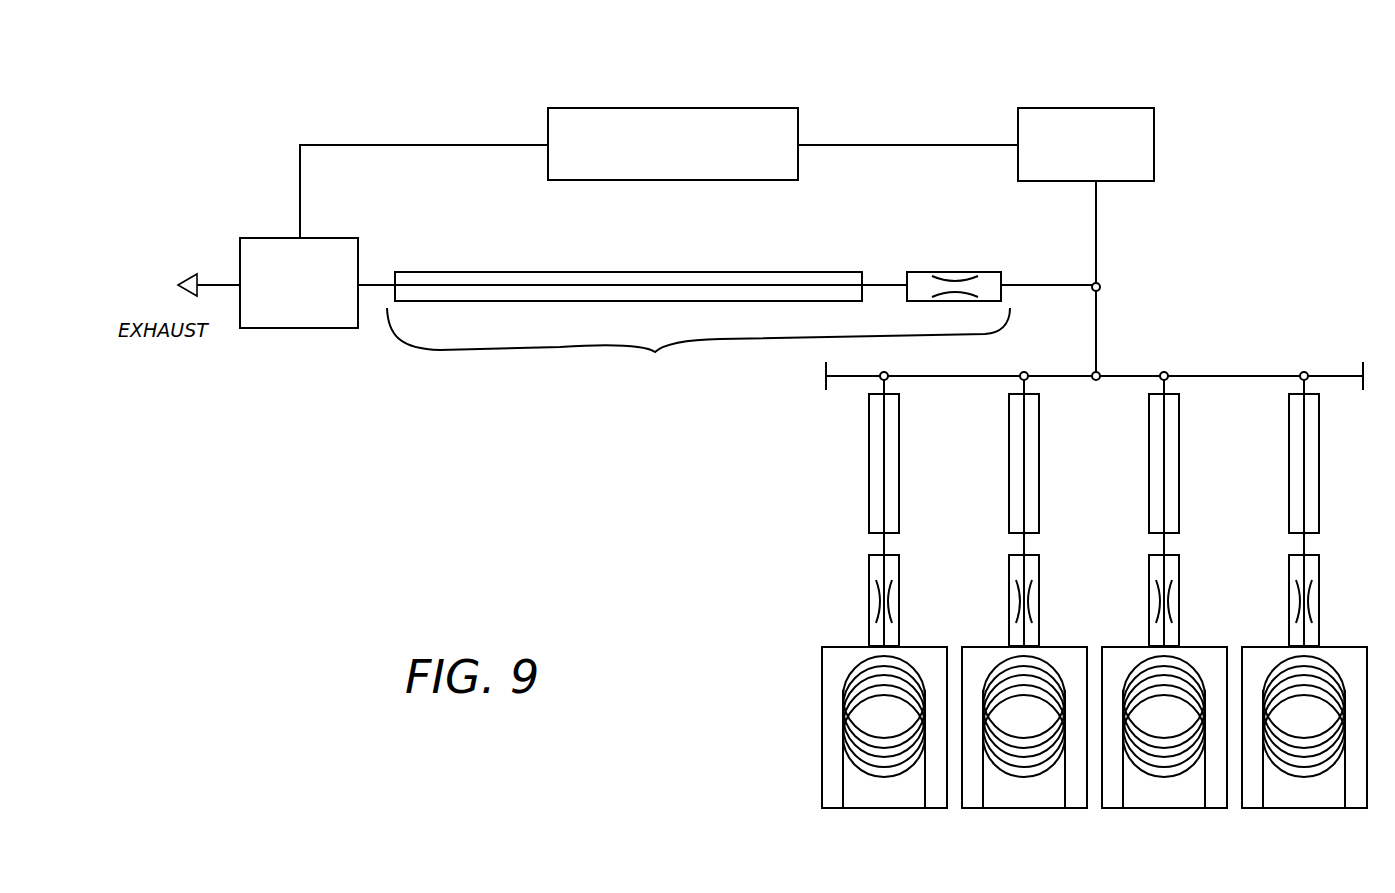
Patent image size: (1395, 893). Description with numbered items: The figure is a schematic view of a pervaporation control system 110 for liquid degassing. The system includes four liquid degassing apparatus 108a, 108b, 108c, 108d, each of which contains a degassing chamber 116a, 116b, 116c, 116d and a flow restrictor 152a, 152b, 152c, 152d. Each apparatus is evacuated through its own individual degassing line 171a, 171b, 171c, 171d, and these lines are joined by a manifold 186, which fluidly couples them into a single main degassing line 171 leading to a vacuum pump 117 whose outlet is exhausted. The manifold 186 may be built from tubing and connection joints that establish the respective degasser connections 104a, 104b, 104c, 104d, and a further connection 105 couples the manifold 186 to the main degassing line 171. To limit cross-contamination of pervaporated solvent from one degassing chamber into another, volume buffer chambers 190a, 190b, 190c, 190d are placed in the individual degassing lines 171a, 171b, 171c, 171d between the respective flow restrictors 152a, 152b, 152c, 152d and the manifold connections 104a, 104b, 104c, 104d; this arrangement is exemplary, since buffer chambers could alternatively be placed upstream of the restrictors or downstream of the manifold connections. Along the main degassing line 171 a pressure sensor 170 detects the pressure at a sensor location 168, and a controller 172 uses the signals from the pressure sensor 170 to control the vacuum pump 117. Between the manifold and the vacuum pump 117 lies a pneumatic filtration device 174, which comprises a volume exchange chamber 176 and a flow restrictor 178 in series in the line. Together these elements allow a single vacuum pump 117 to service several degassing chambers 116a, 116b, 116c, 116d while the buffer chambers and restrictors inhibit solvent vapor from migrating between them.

The pervaporation control system 110 is at (610, 512).
The vacuum pump 117 is at (283, 238).
The controller 172 is at (700, 108).
The pressure sensor 170 is at (1078, 108).
The volume exchange chamber 176 is at (622, 272).
The flow restrictor 178 is at (940, 272).
The main degassing line 171 is at (1047, 272).
The sensor location 168 is at (1101, 287).
The pneumatic filtration device 174 is at (655, 352).
The manifold 186 is at (1239, 370).
The manifold inlet node 105 is at (1101, 373).
The degasser connection 104a is at (886, 372).
The degasser connection 104b is at (1026, 372).
The degasser connection 104c is at (1166, 372).
The degasser connection 104d is at (1306, 372).
The individual degassing line 171a is at (876, 388).
The individual degassing line 171b is at (1016, 388).
The individual degassing line 171c is at (1156, 388).
The individual degassing line 171d is at (1298, 386).
The volume buffer chamber 190a is at (868, 455).
The volume buffer chamber 190b is at (1008, 455).
The volume buffer chamber 190c is at (1148, 455).
The volume buffer chamber 190d is at (1288, 450).
The flow restrictor 152a is at (868, 582).
The flow restrictor 152b is at (1008, 582).
The flow restrictor 152c is at (1148, 582).
The flow restrictor 152d is at (1288, 585).
The degassing chamber 116a is at (848, 647).
The degassing chamber 116b is at (998, 647).
The degassing chamber 116c is at (1136, 647).
The degassing chamber 116d is at (1276, 647).
The liquid degassing apparatus 108a is at (848, 816).
The liquid degassing apparatus 108b is at (988, 816).
The liquid degassing apparatus 108c is at (1130, 816).
The liquid degassing apparatus 108d is at (1290, 816).